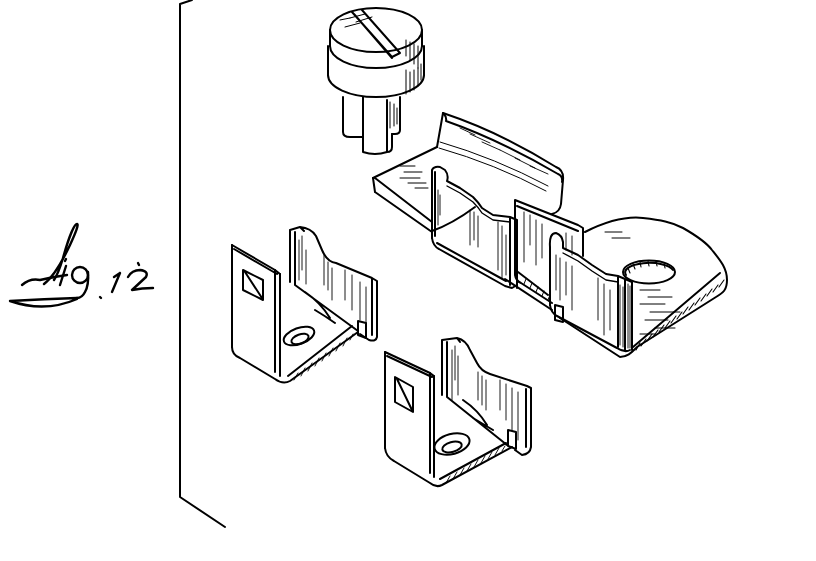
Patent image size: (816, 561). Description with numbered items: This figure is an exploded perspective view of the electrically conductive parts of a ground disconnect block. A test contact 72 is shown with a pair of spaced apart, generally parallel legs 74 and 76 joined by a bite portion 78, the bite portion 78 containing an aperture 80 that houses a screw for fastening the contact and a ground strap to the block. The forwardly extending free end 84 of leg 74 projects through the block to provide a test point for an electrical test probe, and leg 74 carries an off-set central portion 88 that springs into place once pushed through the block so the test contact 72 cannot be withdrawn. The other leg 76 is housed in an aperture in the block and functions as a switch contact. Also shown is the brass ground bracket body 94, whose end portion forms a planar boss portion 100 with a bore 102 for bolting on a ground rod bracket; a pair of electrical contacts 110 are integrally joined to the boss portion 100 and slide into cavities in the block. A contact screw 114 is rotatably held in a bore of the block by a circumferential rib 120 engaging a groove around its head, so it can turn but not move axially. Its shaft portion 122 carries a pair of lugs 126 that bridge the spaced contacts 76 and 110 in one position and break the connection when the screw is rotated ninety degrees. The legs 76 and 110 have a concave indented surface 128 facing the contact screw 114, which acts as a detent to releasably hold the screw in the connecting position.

The test contacts 72 is at (272, 377).
The leg 74 is at (238, 307).
The leg 76 is at (347, 282).
The bite portion 78 is at (334, 330).
The aperture 80 is at (303, 341).
The free end 84 is at (240, 245).
The off-set central portion 88 is at (400, 397).
The ground bracket body 94 is at (550, 235).
The planar boss portion 100 is at (628, 231).
The bore 102 is at (668, 262).
The electrical contacts 110 is at (453, 183).
The contact screws 114 is at (415, 56).
The circumferential rib 120 is at (328, 78).
The shaft portion 122 is at (362, 143).
The lugs 126 is at (398, 113).
The indented surface 128 is at (432, 231).